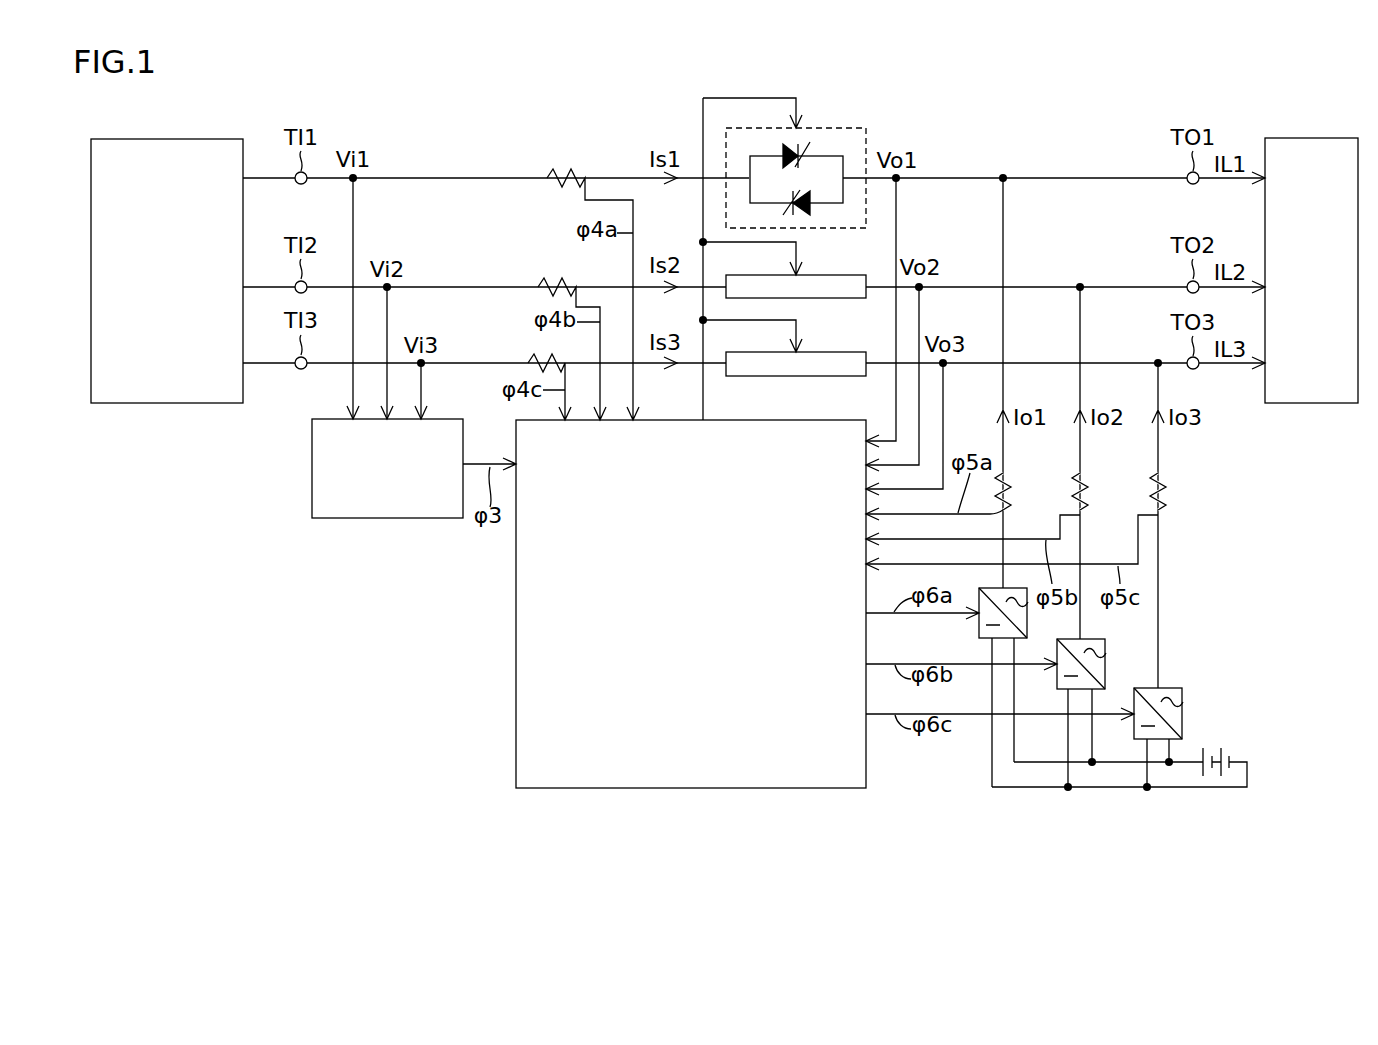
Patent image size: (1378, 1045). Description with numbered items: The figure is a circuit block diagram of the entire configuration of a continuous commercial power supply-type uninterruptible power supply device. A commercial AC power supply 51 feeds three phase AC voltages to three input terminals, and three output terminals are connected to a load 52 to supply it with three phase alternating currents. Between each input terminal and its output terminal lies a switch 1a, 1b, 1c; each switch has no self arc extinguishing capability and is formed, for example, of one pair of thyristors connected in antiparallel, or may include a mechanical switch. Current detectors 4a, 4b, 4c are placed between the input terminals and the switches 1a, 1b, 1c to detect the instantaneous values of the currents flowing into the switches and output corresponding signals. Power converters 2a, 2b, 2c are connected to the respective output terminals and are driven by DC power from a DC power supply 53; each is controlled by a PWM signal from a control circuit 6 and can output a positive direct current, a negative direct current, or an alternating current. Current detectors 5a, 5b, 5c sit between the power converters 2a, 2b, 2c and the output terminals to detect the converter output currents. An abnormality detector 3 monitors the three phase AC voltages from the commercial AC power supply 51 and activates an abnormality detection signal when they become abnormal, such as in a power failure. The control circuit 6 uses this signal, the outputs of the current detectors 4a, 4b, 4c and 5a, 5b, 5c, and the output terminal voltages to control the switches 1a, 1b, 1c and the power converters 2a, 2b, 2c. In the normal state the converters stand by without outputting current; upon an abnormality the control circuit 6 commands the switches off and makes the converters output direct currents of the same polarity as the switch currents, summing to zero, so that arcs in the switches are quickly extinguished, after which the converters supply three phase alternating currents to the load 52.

The commercial AC power supply 51 is at (167, 139).
The load 52 is at (1312, 138).
The DC power supply 53 is at (1218, 746).
The switch 1a is at (820, 130).
The switch 1b is at (820, 275).
The switch 1c is at (820, 352).
The power converter 2a is at (979, 628).
The power converter 2b is at (1108, 645).
The power converter 2c is at (1180, 690).
The abnormality detector 3 is at (387, 518).
The current detector 4a is at (564, 171).
The current detector 4b is at (552, 278).
The current detector 4c is at (540, 357).
The current detector 5a is at (1012, 495).
The current detector 5b is at (1090, 495).
The current detector 5c is at (1168, 495).
The control circuit 6 is at (516, 696).